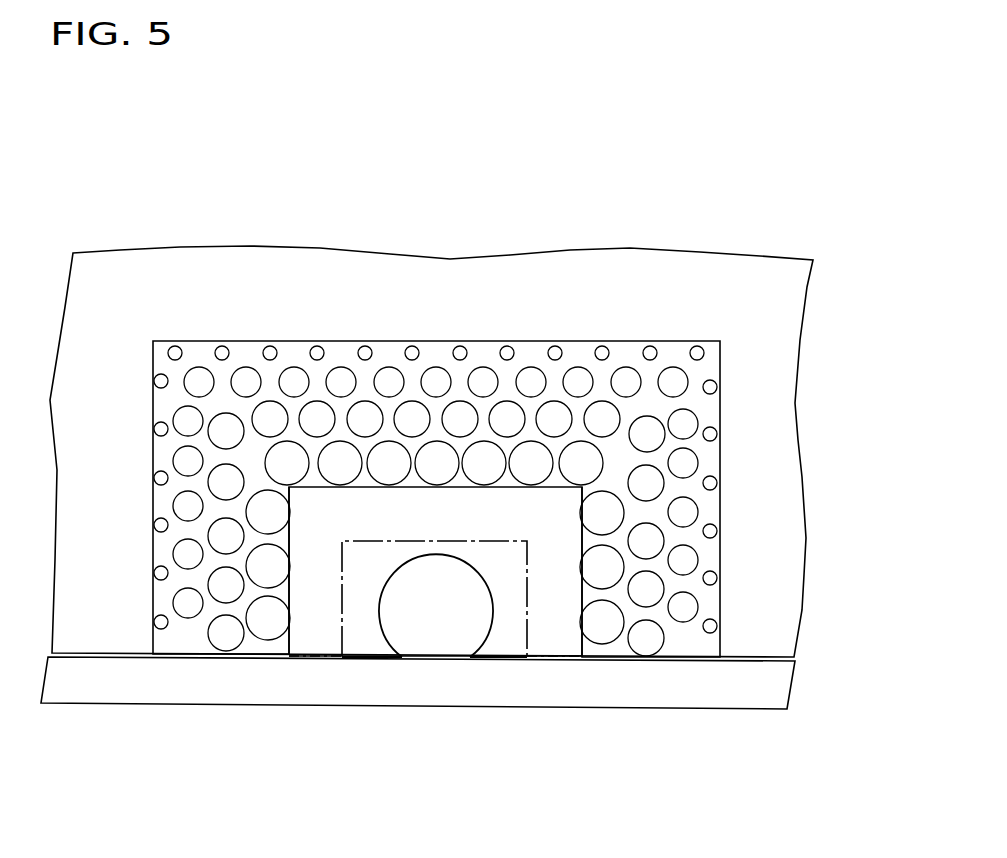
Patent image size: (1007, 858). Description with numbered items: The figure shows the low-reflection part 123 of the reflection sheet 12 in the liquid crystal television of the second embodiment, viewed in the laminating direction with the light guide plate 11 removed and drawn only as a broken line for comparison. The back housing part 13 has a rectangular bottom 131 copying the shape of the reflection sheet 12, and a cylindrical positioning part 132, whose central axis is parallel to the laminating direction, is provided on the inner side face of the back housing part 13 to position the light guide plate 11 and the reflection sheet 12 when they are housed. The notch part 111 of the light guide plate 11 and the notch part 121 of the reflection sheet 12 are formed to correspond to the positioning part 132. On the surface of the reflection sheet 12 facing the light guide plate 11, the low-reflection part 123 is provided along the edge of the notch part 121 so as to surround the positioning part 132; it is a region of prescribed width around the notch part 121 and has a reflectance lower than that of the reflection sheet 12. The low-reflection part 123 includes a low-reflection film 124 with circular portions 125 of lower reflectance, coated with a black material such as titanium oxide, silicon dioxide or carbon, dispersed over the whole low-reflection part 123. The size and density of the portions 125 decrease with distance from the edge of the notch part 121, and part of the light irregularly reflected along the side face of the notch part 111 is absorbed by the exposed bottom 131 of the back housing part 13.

The light guide plate 11 is at (323, 617).
The notch part 111 is at (345, 607).
The reflection sheet 12 is at (777, 493).
The notch part 121 is at (580, 637).
The low-reflection part 123 is at (530, 341).
The low-reflection film 124 is at (625, 355).
The portions 125 is at (675, 365).
The back housing part 13 is at (118, 703).
The bottom 131 is at (507, 642).
The positioning part 132 is at (436, 619).